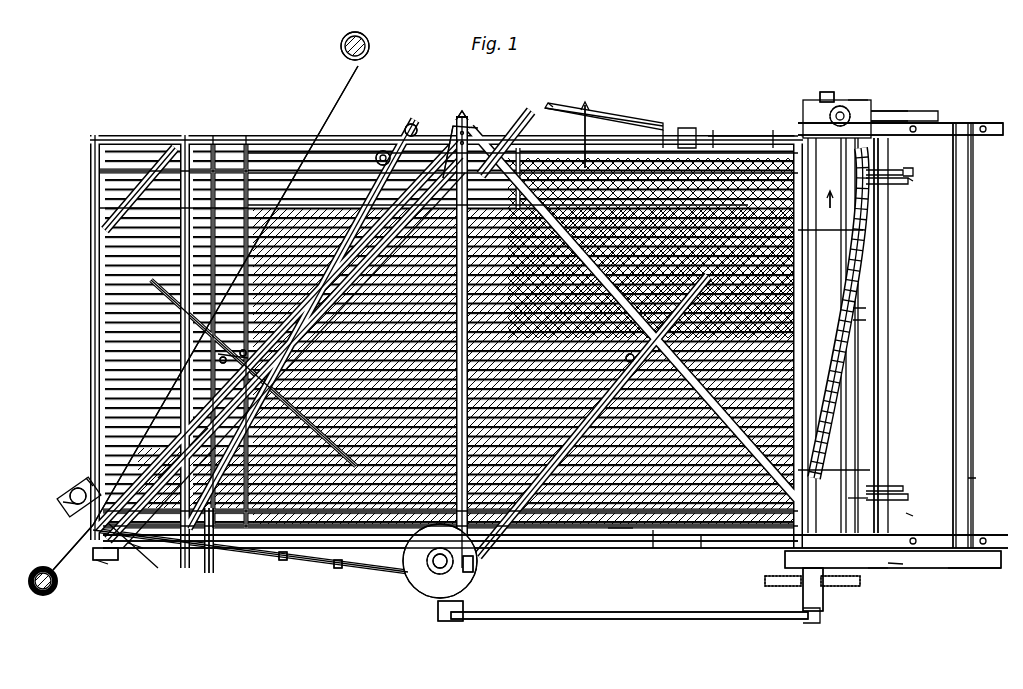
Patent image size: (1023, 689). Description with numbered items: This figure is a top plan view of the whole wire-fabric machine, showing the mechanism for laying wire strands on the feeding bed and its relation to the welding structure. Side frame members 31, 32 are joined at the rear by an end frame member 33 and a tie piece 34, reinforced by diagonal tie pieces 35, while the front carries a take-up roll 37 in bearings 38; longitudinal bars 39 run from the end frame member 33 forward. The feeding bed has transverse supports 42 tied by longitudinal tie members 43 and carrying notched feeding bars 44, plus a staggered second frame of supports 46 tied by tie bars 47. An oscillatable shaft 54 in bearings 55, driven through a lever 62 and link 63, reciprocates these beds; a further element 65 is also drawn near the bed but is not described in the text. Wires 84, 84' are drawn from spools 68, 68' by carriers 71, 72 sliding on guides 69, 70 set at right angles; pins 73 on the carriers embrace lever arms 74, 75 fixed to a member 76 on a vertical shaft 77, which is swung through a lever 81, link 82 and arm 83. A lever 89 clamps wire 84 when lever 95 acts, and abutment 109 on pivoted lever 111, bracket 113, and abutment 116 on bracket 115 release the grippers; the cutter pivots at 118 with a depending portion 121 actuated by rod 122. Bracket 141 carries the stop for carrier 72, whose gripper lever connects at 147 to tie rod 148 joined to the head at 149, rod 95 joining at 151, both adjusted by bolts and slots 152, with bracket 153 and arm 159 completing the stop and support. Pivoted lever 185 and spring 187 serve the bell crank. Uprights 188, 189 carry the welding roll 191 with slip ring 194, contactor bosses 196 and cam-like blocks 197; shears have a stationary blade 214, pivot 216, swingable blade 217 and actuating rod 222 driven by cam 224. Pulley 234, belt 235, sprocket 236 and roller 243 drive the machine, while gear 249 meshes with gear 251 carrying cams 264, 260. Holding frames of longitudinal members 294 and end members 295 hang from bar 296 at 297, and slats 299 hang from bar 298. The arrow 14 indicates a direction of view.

The direction arrow 14 is at (708, 143).
The side frame member 31 is at (247, 130).
The side frame member 32 is at (555, 528).
The end frame member 33 is at (85, 252).
The tie piece 34 is at (176, 140).
The diagonal tie piece 35 is at (143, 548).
The take-up roll 37 is at (963, 176).
The bearing 38 is at (975, 528).
The longitudinal bar 39 is at (215, 535).
The transverse feeding bar support 42 is at (645, 522).
The longitudinal tie member 43 is at (293, 145).
The notched wire feeding bar 44 is at (95, 200).
The transverse support 46 is at (238, 197).
The tie bar 47 is at (265, 165).
The oscillatable shaft 54 is at (705, 122).
The bearing 55 is at (693, 528).
The lever 62 is at (678, 120).
The link 63 is at (725, 120).
The bracket 65 is at (612, 520).
The spool 68 is at (49, 592).
The spool 68' is at (347, 37).
The guide 69 is at (180, 396).
The guide 70 is at (450, 112).
The wire carrier 71 is at (210, 350).
The wire carrier 72 is at (610, 360).
The pin 73 is at (212, 358).
The lever arm 74 is at (140, 290).
The lever arm 75 is at (522, 520).
The member 76 is at (408, 583).
The vertical shaft 77 is at (425, 551).
The lever 81 is at (455, 600).
The link 82 is at (682, 612).
The arm 83 is at (812, 603).
The wire 84 is at (56, 547).
The wire 84' is at (249, 292).
The lever 89 is at (85, 540).
The lever 95 is at (243, 552).
The abutment 109 is at (62, 478).
The pivoted lever 111 is at (55, 494).
The bracket 113 is at (78, 470).
The bracket 115 is at (376, 143).
The abutment 116 is at (398, 116).
The pivot 118 is at (92, 556).
The depending portion 121 is at (128, 540).
The rod 122 is at (218, 530).
The bracket 141 is at (438, 108).
The pivot point 147 is at (436, 118).
The tie rod 148 is at (510, 548).
The pin and slot connection 149 is at (465, 556).
The pin and slot connection 151 is at (432, 545).
The bolts and slots 152 is at (330, 558).
The angular supporting bracket 153 is at (893, 560).
The horizontal arm 159 is at (480, 100).
The pivoted lever 185 is at (548, 96).
The spring 187 is at (545, 96).
The upright 188 is at (895, 556).
The upright 189 is at (900, 120).
The welding roll 191 is at (866, 372).
The slip ring 194 is at (850, 492).
The contactor boss 196 is at (850, 270).
The cam-like block 197 is at (858, 312).
The stationary cutting blade 214 is at (896, 480).
The pivot 216 is at (968, 470).
The swingable cutting blade 217 is at (900, 488).
The actuating rod 222 is at (898, 508).
The cam 224 is at (818, 86).
The pulley 234 is at (872, 560).
The belt 235 is at (955, 558).
The sprocket 236 is at (850, 590).
The roller 243 is at (765, 578).
The gear 249 is at (858, 116).
The gear 251 is at (860, 104).
The cam 260 is at (848, 92).
The cam 264 is at (835, 98).
The longitudinal member 294 is at (305, 302).
The end member 295 is at (318, 278).
The bar 296 is at (150, 452).
The pivot 297 is at (185, 432).
The bar 298 is at (862, 462).
The rod or slat 299 is at (855, 222).